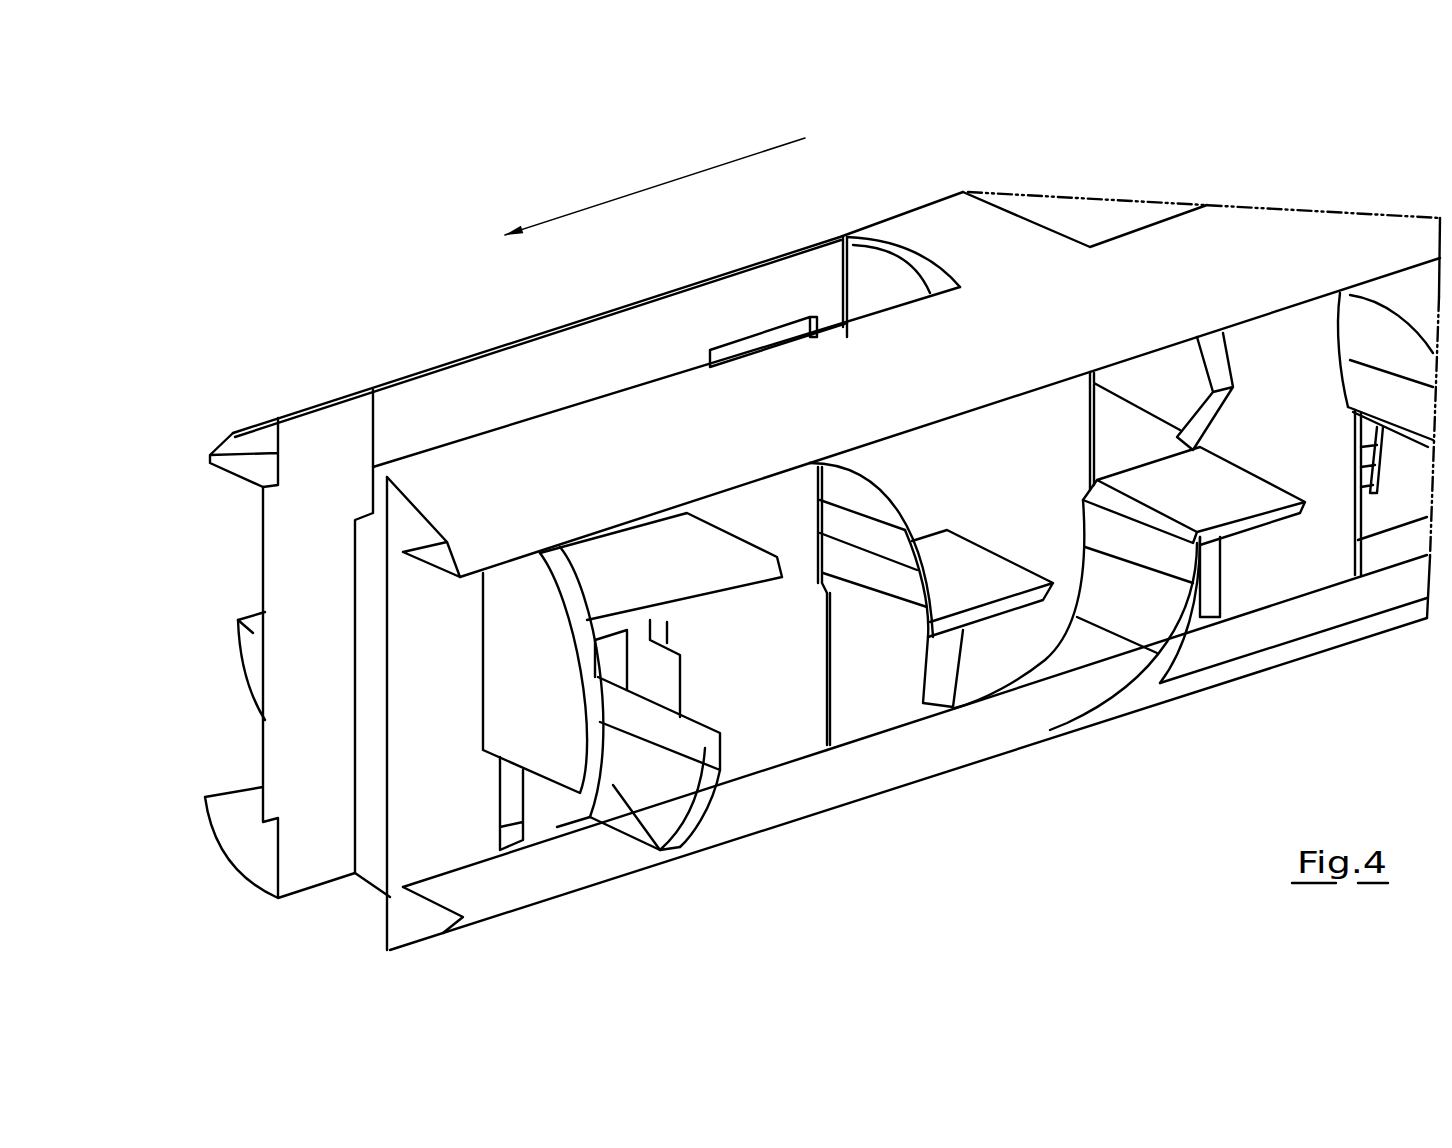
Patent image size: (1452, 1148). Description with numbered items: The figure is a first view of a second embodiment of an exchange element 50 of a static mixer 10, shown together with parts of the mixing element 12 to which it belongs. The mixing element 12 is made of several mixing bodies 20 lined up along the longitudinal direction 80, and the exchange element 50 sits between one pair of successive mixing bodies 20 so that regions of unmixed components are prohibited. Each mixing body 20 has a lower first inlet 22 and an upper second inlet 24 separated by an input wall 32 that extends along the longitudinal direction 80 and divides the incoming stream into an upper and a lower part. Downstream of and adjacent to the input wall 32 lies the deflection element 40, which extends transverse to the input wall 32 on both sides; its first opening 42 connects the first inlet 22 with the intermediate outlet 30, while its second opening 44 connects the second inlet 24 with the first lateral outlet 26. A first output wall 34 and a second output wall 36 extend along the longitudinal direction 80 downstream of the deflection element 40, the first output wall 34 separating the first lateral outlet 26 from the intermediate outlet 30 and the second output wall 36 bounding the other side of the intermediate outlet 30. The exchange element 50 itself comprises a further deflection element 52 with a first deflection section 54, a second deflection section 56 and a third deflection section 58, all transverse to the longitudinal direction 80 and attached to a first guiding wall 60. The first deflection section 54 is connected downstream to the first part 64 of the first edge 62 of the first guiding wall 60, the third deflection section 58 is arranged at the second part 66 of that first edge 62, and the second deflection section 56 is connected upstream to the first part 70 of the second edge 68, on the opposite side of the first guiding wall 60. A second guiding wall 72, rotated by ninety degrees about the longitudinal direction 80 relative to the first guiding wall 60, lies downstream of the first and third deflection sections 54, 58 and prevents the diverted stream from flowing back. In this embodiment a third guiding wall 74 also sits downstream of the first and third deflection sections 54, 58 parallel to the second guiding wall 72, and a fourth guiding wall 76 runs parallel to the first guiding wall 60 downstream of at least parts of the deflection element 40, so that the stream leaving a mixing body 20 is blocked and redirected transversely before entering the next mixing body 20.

The static mixer 10 is at (245, 145).
The mixing element 12 is at (805, 262).
The mixing body 20 is at (955, 130).
The first inlet 22 is at (977, 670).
The second inlet 24 is at (975, 463).
The first lateral outlet 26 is at (783, 617).
The intermediate outlet 30 is at (733, 325).
The input wall 32 is at (987, 586).
The first output wall 34 is at (791, 530).
The second output wall 36 is at (676, 353).
The deflection element 40 is at (897, 593).
The first opening 42 is at (835, 302).
The second opening 44 is at (897, 680).
The exchange element 50 is at (388, 208).
The further deflection element 52 is at (660, 850).
The first deflection section 54 is at (535, 668).
The second deflection section 56 is at (674, 815).
The third deflection section 58 is at (240, 652).
The first guiding wall 60 is at (656, 753).
The first edge 62 is at (238, 620).
The first part of the first edge 64 is at (530, 777).
The second part of the first edge 66 is at (197, 589).
The second edge 68 is at (710, 745).
The first part of the second edge 70 is at (751, 834).
The second guiding wall 72 is at (454, 748).
The third guiding wall 74 is at (322, 697).
The fourth guiding wall 76 is at (684, 573).
The longitudinal direction 80 is at (655, 182).